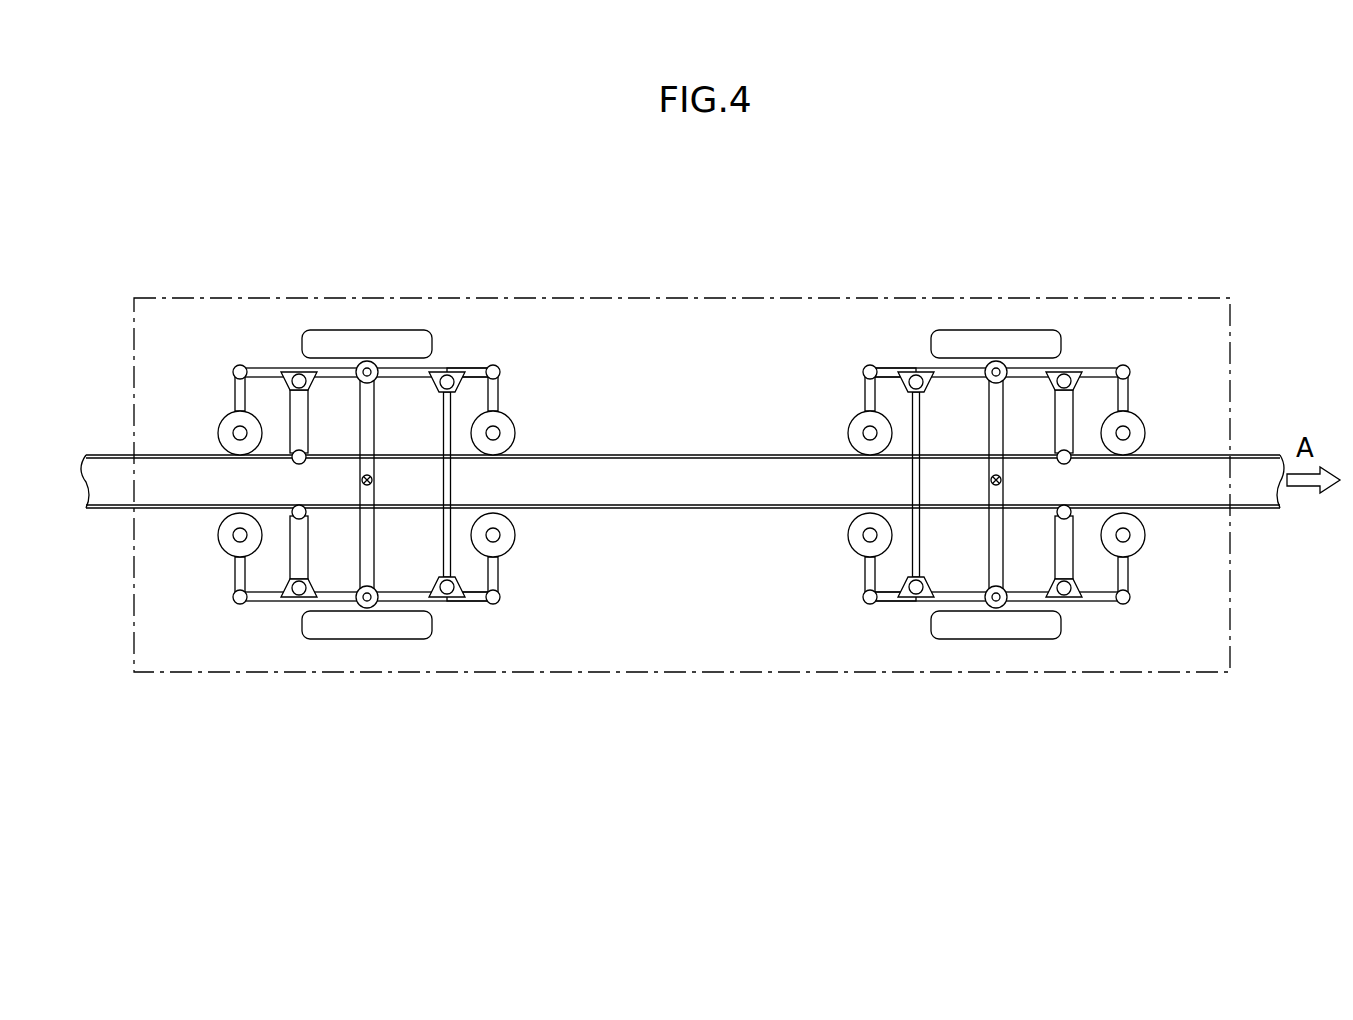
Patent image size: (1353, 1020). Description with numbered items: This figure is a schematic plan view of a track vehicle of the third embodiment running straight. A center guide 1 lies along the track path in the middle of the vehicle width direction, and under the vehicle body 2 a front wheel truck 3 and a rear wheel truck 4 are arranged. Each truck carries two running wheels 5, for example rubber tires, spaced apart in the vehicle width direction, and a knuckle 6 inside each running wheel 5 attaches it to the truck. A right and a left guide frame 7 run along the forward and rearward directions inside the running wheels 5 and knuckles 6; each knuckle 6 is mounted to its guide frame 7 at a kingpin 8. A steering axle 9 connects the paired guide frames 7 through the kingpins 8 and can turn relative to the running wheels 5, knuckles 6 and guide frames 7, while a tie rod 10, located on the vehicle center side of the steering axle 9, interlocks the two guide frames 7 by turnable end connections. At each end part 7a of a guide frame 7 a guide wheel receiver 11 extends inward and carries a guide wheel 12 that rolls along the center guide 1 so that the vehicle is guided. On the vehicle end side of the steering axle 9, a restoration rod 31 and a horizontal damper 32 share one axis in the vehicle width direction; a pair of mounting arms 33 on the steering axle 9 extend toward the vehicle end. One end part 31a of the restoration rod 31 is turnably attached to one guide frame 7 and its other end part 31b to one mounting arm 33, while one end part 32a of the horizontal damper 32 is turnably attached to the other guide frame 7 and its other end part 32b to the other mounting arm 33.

The center guide 1 is at (120, 455).
The vehicle body 2 is at (648, 298).
The front wheel truck 3 is at (855, 325).
The rear wheel truck 4 is at (212, 324).
The running wheel 5 is at (394, 330).
The knuckle 6 is at (352, 380).
The guide frame 7 is at (478, 368).
The end part 7a is at (236, 368).
The kingpin 8 is at (378, 378).
The steering axle 9 is at (375, 470).
The tie rod 10 is at (452, 470).
The guide wheel receiver 11 is at (235, 398).
The guide wheel 12 is at (232, 428).
The restoration rod 31 is at (293, 556).
The one end part of restoration rod 31a is at (300, 600).
The other end part of restoration rod 31b is at (304, 512).
The horizontal damper 32 is at (292, 404).
The one end part of horizontal damper 32a is at (299, 373).
The other end part of horizontal damper 32b is at (294, 460).
The mounting arm 33 is at (356, 467).